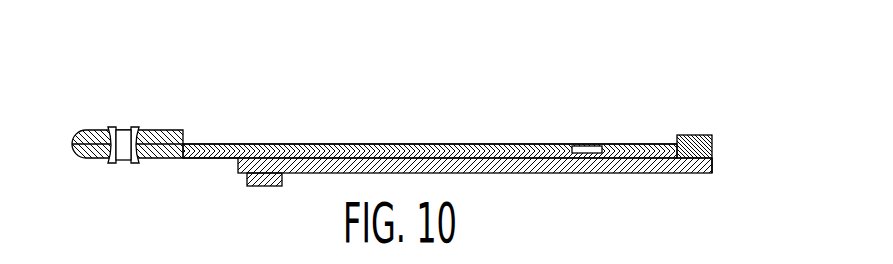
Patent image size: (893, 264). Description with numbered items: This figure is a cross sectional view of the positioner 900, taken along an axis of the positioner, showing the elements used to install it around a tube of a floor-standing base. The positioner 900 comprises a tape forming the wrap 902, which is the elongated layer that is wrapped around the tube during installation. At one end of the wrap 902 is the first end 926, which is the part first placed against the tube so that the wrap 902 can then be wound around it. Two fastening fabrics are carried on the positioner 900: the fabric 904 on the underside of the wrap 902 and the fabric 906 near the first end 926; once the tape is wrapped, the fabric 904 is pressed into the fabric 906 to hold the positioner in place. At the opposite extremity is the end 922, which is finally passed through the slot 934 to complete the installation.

The positioner 900 is at (120, 98).
The end 922 is at (72, 147).
The slot 934 is at (587, 138).
The fabric 906 is at (688, 135).
The wrap 902 is at (552, 174).
The first end 926 is at (712, 168).
The fabric 904 is at (252, 187).